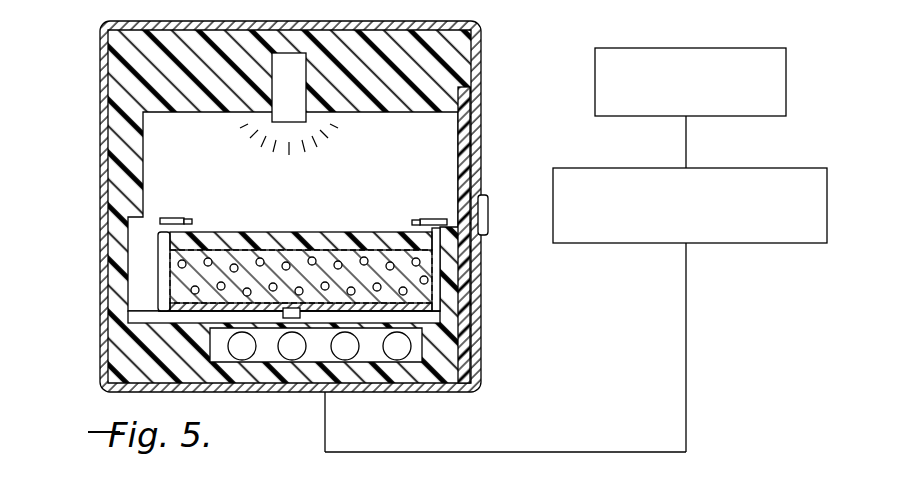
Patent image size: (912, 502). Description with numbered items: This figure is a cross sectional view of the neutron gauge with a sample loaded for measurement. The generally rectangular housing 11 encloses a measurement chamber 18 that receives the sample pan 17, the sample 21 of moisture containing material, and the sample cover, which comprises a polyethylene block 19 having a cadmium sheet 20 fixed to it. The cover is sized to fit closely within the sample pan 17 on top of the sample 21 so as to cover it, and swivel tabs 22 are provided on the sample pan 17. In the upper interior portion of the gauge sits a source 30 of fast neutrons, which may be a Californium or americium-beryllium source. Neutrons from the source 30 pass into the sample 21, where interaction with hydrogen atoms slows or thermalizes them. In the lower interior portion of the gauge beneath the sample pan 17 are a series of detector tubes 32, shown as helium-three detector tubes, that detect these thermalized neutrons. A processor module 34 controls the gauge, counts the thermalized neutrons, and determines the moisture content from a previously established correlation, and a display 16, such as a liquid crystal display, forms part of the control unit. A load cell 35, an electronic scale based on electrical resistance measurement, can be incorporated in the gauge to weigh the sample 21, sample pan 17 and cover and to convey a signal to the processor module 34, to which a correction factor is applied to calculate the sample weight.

The housing 11 is at (457, 22).
The source of fast neutrons 30 is at (277, 86).
The measurement chamber 18 is at (152, 146).
The swivel tabs 22 is at (175, 220).
The sample 21 is at (330, 265).
The sample pan 17 is at (160, 232).
The polyethylene block 19 is at (215, 268).
The cadmium sheet 20 is at (215, 306).
The load cell 35 is at (300, 313).
The detector tubes 32 is at (397, 346).
The display 16 is at (766, 50).
The processor module 34 is at (758, 170).